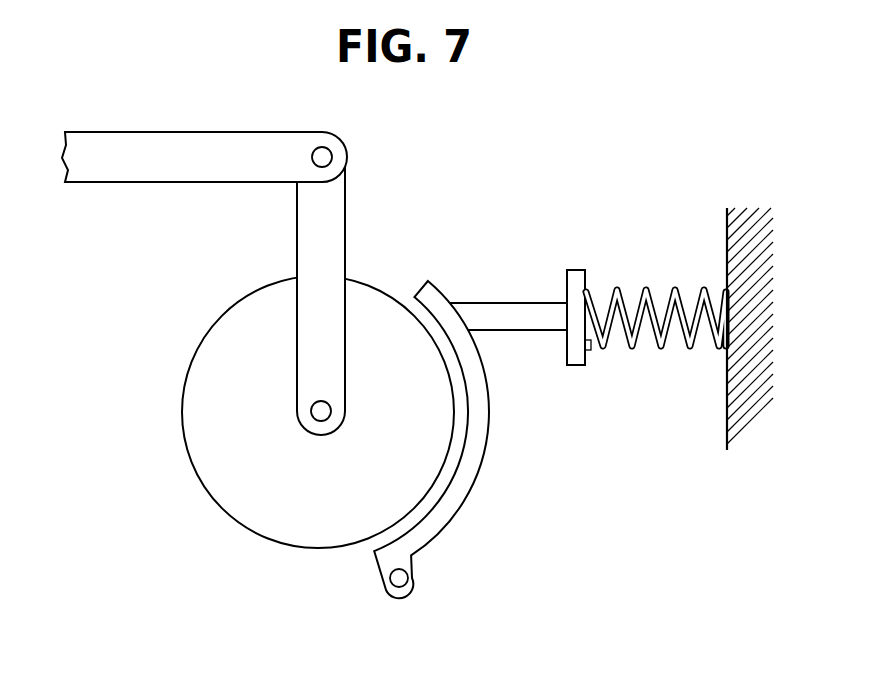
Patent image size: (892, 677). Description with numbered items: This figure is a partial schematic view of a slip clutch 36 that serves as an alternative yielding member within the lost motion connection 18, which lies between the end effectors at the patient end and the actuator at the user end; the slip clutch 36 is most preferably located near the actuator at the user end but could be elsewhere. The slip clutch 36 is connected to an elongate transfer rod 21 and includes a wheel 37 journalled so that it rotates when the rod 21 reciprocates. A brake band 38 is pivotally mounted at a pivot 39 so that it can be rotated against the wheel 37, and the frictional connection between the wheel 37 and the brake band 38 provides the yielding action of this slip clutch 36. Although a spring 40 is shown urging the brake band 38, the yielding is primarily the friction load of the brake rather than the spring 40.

The lost motion connection 18 is at (474, 250).
The elongate transfer rod 21 is at (193, 150).
The slip clutch 36 is at (358, 547).
The wheel 37 is at (184, 412).
The brake band 38 is at (480, 458).
The pivot 39 is at (406, 584).
The spring 40 is at (650, 290).